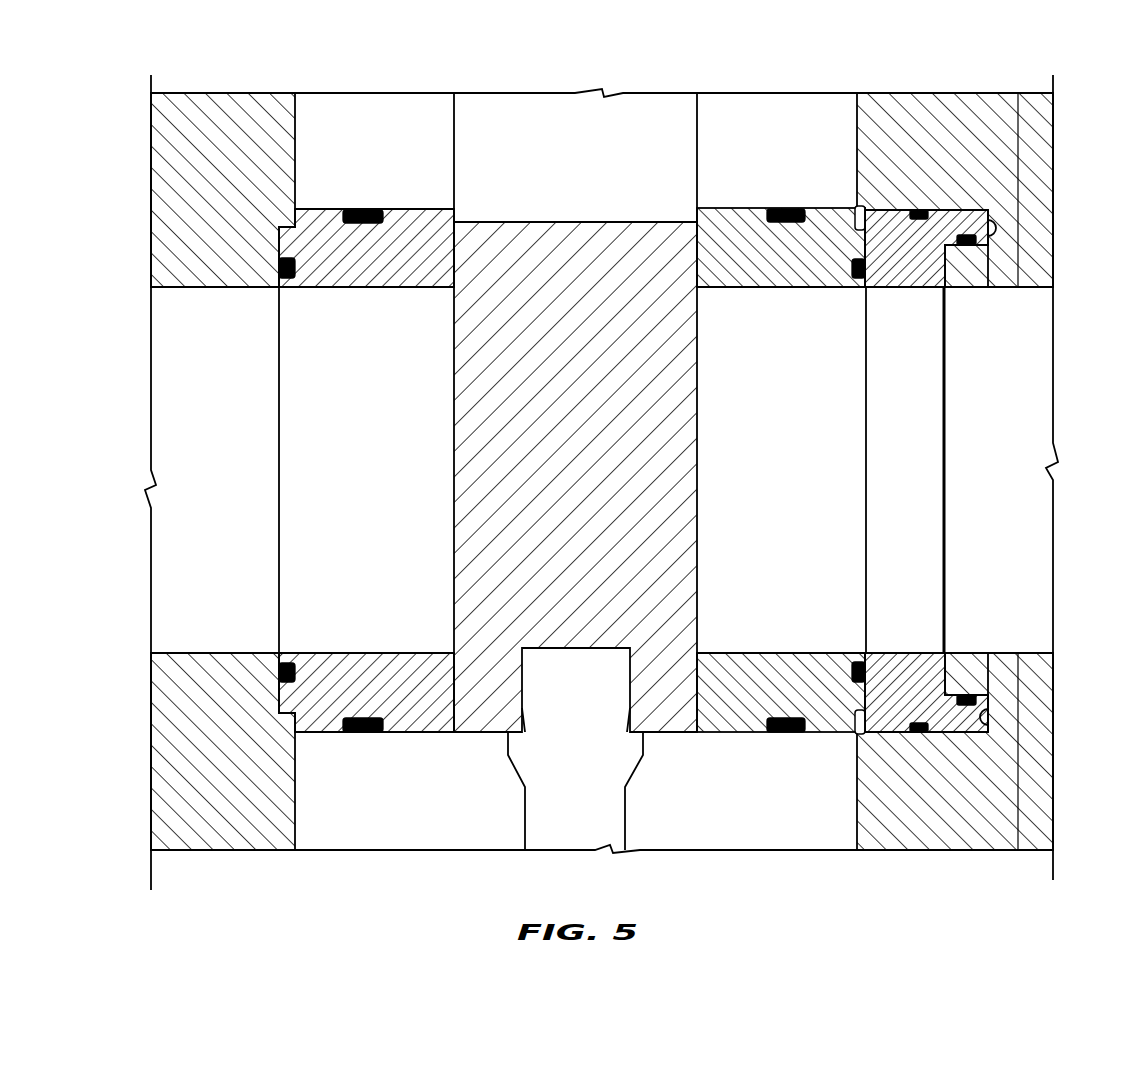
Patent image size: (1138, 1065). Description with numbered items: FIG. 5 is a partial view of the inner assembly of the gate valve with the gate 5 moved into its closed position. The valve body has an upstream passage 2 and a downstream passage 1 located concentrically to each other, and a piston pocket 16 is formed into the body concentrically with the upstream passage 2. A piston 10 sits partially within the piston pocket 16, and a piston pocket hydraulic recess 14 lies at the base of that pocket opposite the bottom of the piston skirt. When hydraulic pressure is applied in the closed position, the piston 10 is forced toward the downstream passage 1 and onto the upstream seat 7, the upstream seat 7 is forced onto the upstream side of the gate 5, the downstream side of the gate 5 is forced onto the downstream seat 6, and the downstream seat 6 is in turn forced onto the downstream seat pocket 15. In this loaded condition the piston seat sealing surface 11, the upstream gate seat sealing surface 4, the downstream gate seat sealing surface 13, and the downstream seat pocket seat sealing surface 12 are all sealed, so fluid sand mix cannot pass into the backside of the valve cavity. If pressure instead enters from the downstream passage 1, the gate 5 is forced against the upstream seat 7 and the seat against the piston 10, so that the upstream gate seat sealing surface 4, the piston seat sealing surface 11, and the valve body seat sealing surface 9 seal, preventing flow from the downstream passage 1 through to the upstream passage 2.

The downstream passage 1 is at (174, 387).
The upstream passage 2 is at (988, 494).
The upstream gate seat sealing surface 4 is at (700, 708).
The gate 5 is at (543, 258).
The downstream seat 6 is at (289, 470).
The upstream seat 7 is at (815, 379).
The valve body seat sealing surface 9 is at (943, 262).
The piston 10 is at (885, 710).
The piston seat sealing surface 11 is at (868, 268).
The downstream seat pocket seat sealing surface 12 is at (280, 236).
The downstream gate seat sealing surface 13 is at (432, 258).
The piston pocket hydraulic recess 14 is at (998, 717).
The downstream seat pocket 15 is at (280, 702).
The piston pocket 16 is at (955, 208).